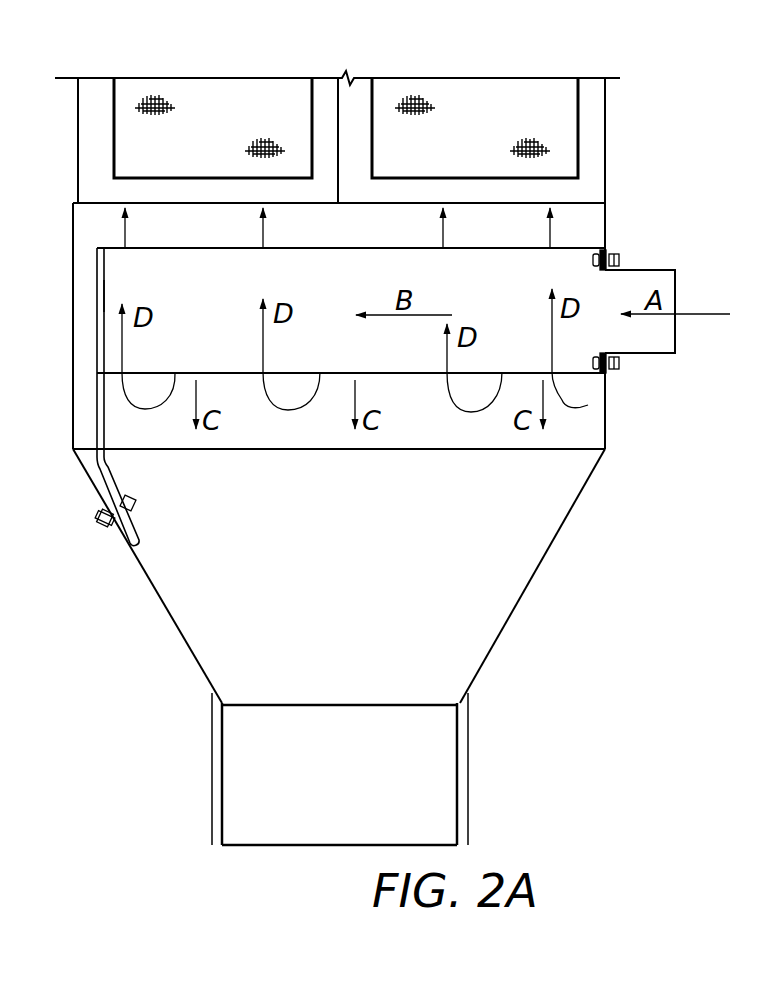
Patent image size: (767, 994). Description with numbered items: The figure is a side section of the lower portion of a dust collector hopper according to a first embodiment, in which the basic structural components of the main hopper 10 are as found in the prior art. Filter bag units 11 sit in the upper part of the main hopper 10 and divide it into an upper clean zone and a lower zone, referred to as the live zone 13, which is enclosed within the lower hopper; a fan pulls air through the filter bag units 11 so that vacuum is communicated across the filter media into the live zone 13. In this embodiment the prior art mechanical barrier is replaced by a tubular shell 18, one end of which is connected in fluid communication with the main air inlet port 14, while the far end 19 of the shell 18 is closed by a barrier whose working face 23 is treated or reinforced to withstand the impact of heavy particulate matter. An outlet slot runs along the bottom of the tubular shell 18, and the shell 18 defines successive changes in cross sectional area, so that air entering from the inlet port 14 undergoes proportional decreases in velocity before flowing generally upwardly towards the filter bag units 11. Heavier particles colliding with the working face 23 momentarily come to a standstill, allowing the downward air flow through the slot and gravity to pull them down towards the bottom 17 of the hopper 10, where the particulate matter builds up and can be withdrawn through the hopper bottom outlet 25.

The main hopper 10 is at (73, 242).
The filter bag units 11 is at (133, 137).
The live zone 13 is at (470, 597).
The main air inlet port 14 is at (647, 340).
The bottom of the hopper 17 is at (430, 813).
The tubular shell 18 is at (142, 342).
The far end of the shell 19 is at (97, 298).
The working face 23 is at (112, 296).
The hopper bottom outlet 25 is at (253, 833).